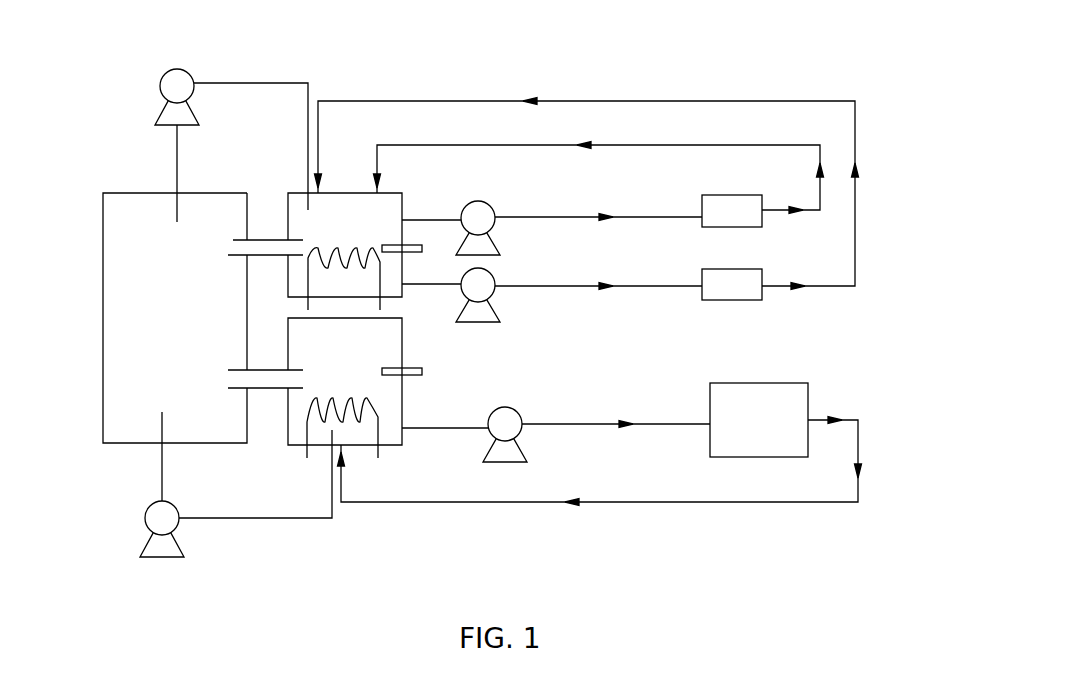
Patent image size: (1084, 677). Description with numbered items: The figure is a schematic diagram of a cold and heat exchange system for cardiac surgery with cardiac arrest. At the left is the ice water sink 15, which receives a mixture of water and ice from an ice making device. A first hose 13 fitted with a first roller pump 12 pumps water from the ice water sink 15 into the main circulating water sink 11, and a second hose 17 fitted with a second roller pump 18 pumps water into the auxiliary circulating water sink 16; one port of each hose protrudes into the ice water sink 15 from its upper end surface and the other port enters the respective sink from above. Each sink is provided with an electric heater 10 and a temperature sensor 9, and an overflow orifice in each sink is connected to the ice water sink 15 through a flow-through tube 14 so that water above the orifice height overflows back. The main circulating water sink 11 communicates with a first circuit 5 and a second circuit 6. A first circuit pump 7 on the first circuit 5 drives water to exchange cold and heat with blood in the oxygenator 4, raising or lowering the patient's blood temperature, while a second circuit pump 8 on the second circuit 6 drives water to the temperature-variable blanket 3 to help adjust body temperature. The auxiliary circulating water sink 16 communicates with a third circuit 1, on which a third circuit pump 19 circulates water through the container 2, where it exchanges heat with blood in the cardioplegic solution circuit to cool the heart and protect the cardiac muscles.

The third circuit 1 is at (860, 443).
The container 2 is at (757, 428).
The temperature-variable blanket 3 is at (735, 287).
The oxygenator 4 is at (732, 210).
The first circuit 5 is at (693, 145).
The second circuit 6 is at (600, 101).
The first circuit pump 7 is at (478, 218).
The second circuit pump 8 is at (473, 290).
The temperature sensor 9 is at (410, 250).
The electric heater 10 is at (362, 252).
The main circulating water sink 11 is at (302, 218).
The first roller pump 12 is at (177, 87).
The first hose 13 is at (177, 177).
The flow-through tube 14 is at (235, 240).
The ice water sink 15 is at (135, 279).
The auxiliary circulating water sink 16 is at (308, 352).
The second hose 17 is at (162, 460).
The second roller pump 18 is at (162, 518).
The third circuit pump 19 is at (505, 424).